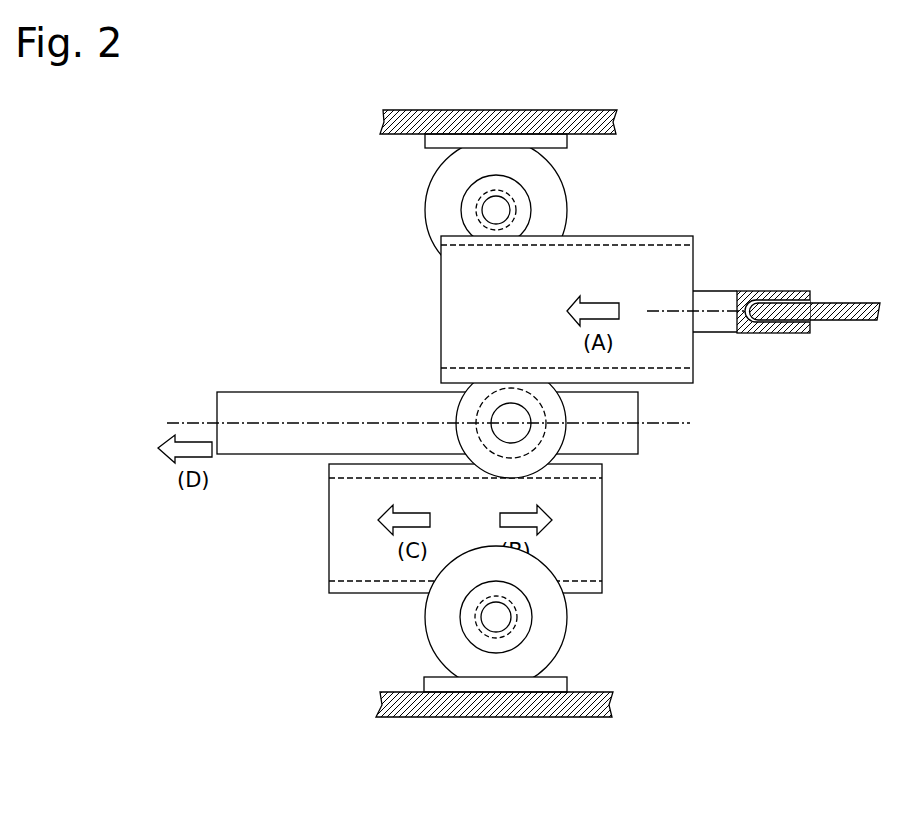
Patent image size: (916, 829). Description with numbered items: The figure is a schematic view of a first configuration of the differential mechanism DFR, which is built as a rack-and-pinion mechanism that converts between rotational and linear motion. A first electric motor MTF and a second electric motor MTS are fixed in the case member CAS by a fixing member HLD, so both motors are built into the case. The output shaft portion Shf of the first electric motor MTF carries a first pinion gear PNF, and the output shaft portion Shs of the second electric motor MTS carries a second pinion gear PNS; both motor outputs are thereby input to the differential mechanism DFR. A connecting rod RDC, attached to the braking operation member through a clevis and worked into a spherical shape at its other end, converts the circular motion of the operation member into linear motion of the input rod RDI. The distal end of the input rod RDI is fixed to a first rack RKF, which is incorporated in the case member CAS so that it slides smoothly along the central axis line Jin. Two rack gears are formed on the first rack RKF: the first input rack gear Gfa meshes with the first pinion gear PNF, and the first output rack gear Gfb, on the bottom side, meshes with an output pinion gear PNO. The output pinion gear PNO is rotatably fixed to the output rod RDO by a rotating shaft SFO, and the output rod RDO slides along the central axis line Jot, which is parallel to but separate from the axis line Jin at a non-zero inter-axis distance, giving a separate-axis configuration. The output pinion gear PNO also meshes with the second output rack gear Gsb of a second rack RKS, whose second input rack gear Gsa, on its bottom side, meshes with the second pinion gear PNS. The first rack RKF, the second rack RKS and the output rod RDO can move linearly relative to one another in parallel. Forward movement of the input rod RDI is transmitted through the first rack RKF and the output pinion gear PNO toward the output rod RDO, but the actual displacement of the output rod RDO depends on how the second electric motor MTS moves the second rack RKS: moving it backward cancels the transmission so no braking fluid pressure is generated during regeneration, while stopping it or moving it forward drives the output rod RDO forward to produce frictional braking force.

The case member CAS is at (445, 112).
The fixing member HLD is at (567, 143).
The first electric motor MTF is at (428, 212).
The first pinion gear PNF is at (528, 205).
The output shaft portion Shf is at (482, 207).
The first rack RKF is at (441, 298).
The first input rack gear Gfa is at (665, 236).
The first output rack gear Gfb is at (689, 383).
The input rod RDI is at (720, 291).
The connecting rod RDC is at (851, 303).
The central axis line Jin is at (650, 311).
The differential mechanism DFR is at (323, 287).
The output rod RDO is at (250, 400).
The output pinion gear PNO is at (468, 396).
The rotating shaft SFO is at (523, 433).
The central axis line Jot is at (170, 423).
The second output rack gear Gsb is at (329, 477).
The second rack RKS is at (329, 530).
The second input rack gear Gsa is at (338, 593).
The second electric motor MTS is at (560, 618).
The second pinion gear PNS is at (465, 623).
The output shaft portion Shs is at (505, 617).